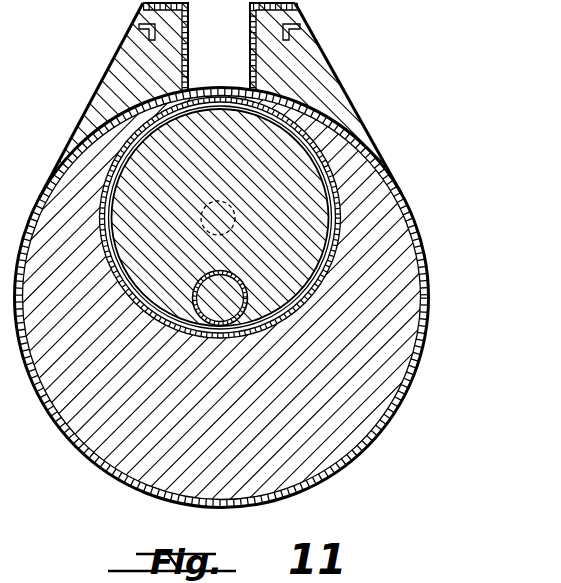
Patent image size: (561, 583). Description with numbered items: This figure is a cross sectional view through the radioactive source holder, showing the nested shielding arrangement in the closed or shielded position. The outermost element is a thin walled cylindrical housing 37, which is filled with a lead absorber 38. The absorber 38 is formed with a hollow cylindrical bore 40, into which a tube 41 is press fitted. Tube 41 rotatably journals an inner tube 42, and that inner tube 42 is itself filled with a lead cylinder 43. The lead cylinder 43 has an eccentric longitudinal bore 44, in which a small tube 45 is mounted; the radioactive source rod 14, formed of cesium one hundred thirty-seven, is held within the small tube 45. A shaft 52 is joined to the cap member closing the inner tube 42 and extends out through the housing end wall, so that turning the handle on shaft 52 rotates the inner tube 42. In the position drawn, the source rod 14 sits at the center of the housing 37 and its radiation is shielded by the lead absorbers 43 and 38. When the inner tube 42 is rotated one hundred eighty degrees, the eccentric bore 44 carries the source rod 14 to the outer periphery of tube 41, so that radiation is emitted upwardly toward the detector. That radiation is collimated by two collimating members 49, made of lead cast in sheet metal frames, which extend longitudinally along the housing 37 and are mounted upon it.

The radioactive source rod 14 is at (228, 312).
The cylindrical housing 37 is at (416, 230).
The lead absorber 38 is at (400, 292).
The hollow cylindrical bore 40 is at (130, 100).
The tube 41 is at (358, 167).
The inner tube 42 is at (293, 148).
The lead cylinder 43 is at (236, 122).
The eccentric longitudinal bore 44 is at (243, 282).
The small tube 45 is at (214, 268).
The collimating members 49 is at (300, 62).
The shaft 52 is at (218, 200).